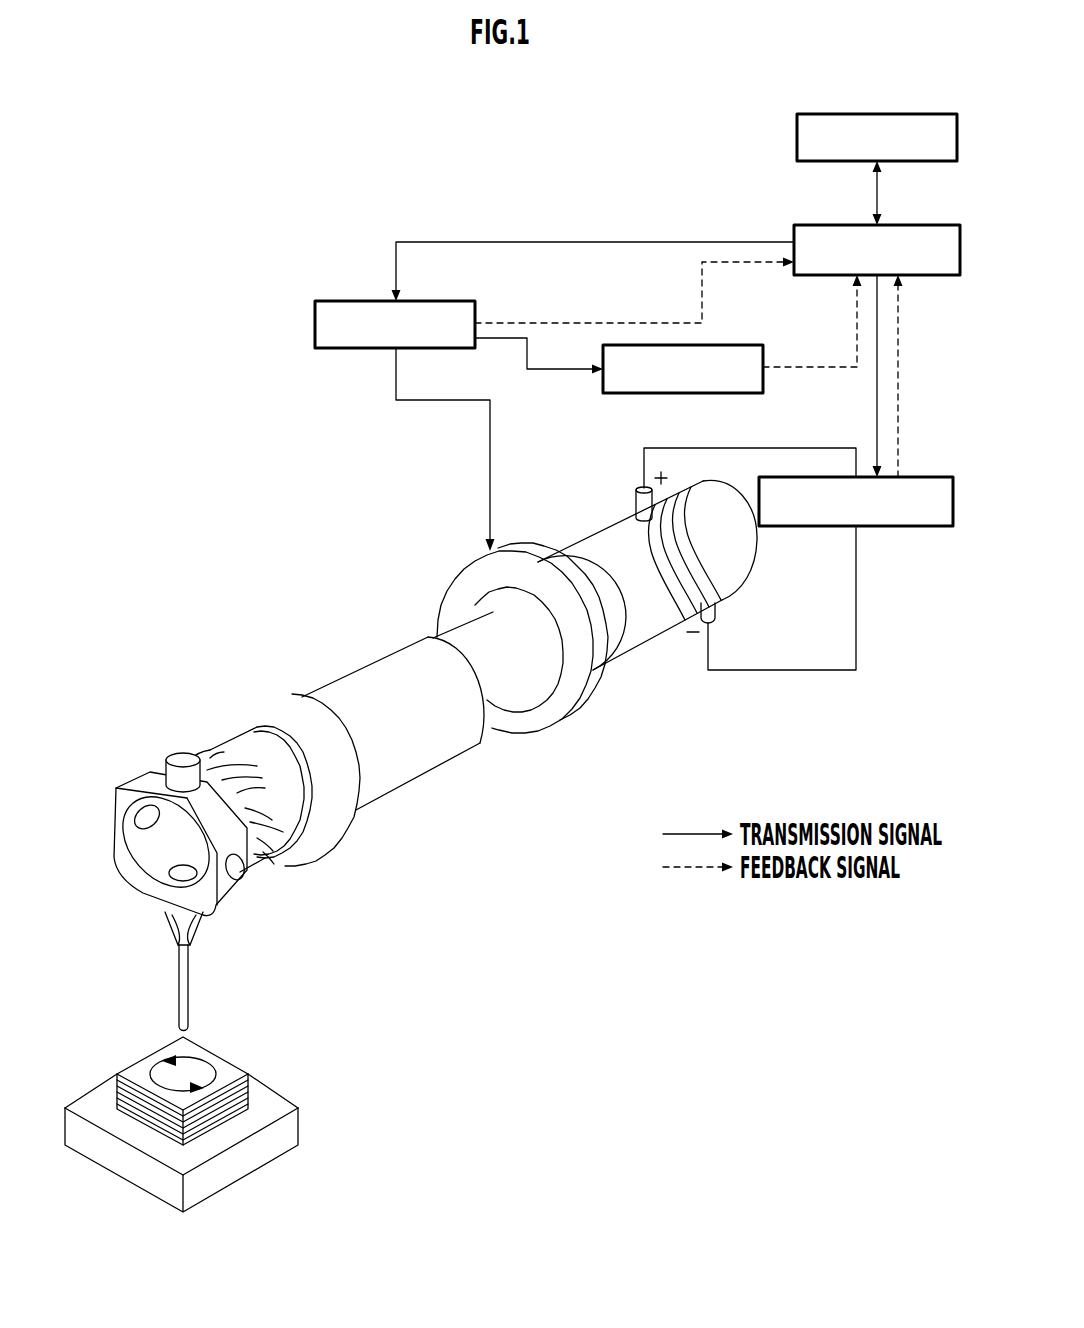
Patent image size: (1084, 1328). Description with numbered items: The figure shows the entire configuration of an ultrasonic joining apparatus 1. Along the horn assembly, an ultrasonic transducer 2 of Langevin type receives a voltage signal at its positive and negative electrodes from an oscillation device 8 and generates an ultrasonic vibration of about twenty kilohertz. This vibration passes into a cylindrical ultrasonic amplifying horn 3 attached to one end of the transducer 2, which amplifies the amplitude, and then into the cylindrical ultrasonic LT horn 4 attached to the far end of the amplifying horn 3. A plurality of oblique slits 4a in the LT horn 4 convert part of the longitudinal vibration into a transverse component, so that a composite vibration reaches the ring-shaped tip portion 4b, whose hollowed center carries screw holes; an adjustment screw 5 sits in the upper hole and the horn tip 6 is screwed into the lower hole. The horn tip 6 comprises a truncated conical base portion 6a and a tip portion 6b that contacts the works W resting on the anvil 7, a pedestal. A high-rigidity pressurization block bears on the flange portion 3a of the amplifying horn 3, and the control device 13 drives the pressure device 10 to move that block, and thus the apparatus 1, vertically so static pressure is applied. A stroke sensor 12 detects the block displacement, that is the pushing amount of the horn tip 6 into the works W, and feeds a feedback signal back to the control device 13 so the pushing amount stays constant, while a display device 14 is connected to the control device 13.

The ultrasonic joining apparatus 1 is at (266, 626).
The ultrasonic transducer 2 is at (583, 539).
The ultrasonic amplifying horn 3 is at (522, 676).
The flange portion 3a is at (524, 737).
The ultrasonic LT horn 4 is at (362, 666).
The oblique slits 4a is at (207, 750).
The tip portion 4b is at (114, 810).
The adjustment screw 5 is at (175, 762).
The horn tip 6 is at (70, 885).
The base portion 6a is at (165, 917).
The tip portion 6b is at (172, 960).
The anvil 7 is at (245, 1168).
The works W is at (228, 1070).
The oscillation device 8 is at (925, 527).
The pressure device 10 is at (320, 300).
The sensor 12 is at (740, 345).
The control device 13 is at (943, 277).
The display device 14 is at (797, 130).